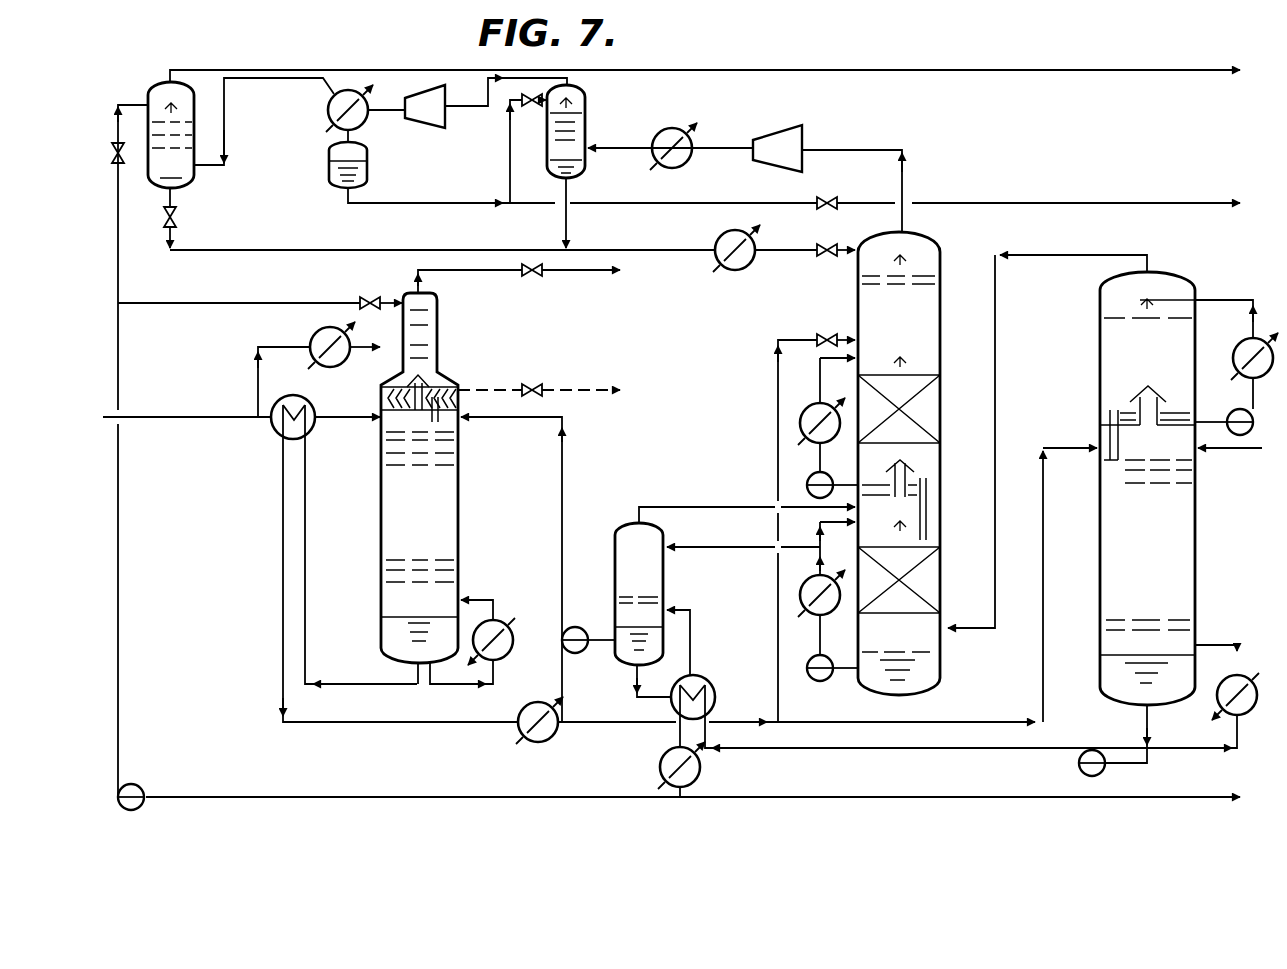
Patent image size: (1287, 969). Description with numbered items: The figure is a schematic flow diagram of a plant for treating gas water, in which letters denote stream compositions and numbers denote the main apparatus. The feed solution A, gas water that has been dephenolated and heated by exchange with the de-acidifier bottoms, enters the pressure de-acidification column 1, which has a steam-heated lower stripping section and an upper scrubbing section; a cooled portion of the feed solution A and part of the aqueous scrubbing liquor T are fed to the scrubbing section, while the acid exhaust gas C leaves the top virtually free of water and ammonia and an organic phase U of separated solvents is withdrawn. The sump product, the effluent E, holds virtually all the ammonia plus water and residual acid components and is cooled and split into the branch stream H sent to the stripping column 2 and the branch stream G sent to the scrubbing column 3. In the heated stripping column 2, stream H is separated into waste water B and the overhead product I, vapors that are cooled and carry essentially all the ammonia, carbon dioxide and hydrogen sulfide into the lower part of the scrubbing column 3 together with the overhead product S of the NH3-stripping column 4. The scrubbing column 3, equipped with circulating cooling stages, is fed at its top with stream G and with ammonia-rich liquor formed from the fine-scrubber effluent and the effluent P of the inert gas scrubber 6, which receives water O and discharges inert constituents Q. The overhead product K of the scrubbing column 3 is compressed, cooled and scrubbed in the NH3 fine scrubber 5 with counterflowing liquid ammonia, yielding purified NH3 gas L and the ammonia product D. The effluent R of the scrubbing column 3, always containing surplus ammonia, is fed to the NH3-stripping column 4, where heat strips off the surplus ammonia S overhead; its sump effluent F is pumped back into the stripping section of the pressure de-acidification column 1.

The pressure de-acidification column 1 is at (458, 508).
The stripping column 2 is at (1195, 540).
The scrubbing column 3 is at (940, 458).
The NH3-stripping column 4 is at (663, 583).
The NH3 fine scrubber 5 is at (585, 112).
The inert gas scrubber 6 is at (188, 186).
The feed solution A is at (1246, 464).
The waste water B is at (888, 800).
The acid exhaust gas C is at (588, 272).
The ammonia D is at (1092, 205).
The effluent from pressure de-acidification column E is at (306, 610).
The effluent from NH3-stripping column F is at (563, 455).
The cooled branch stream from effluent from pressure de-acidification column G is at (776, 398).
The cooled branch stream from effluent from pressure de-acidification column H is at (972, 722).
The overhead product of stripping column I is at (1058, 262).
The overhead product of scrubbing column K is at (905, 176).
The NH3 gas from fine scrubber L is at (478, 108).
The water fed to inert gas scrubber O is at (120, 260).
The effluent from inert gas scrubber P is at (259, 250).
The inert constituents withdrawn from inert gas scrubber Q is at (1028, 72).
The feed for NH3-stripping column R is at (727, 550).
The overhead product from NH3-stripping column S is at (675, 507).
The part of aqueous scrubbing liquor T is at (255, 307).
The organic phase U is at (565, 389).